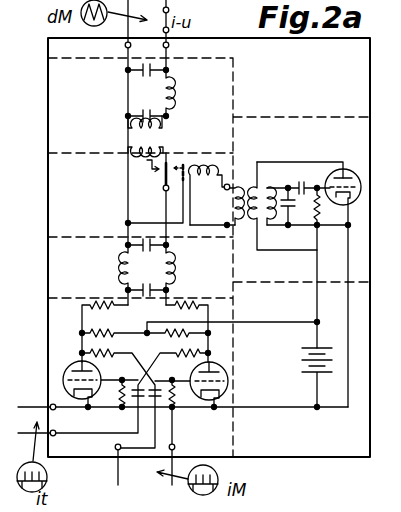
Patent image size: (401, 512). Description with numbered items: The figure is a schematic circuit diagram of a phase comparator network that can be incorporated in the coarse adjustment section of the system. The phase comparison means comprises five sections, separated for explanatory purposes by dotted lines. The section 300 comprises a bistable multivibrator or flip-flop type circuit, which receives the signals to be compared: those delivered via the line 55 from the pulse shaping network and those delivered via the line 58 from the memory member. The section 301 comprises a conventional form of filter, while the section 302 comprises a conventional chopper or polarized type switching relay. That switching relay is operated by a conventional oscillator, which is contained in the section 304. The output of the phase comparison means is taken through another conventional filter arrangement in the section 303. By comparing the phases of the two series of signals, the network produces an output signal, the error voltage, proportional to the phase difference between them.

The bistable multivibrator section 300 is at (48, 313).
The filter section 301 is at (100, 271).
The switching relay section 302 is at (100, 201).
The output filter section 303 is at (100, 116).
The oscillator section 304 is at (312, 120).
The line 55 is at (29, 405).
The line 58 is at (130, 476).